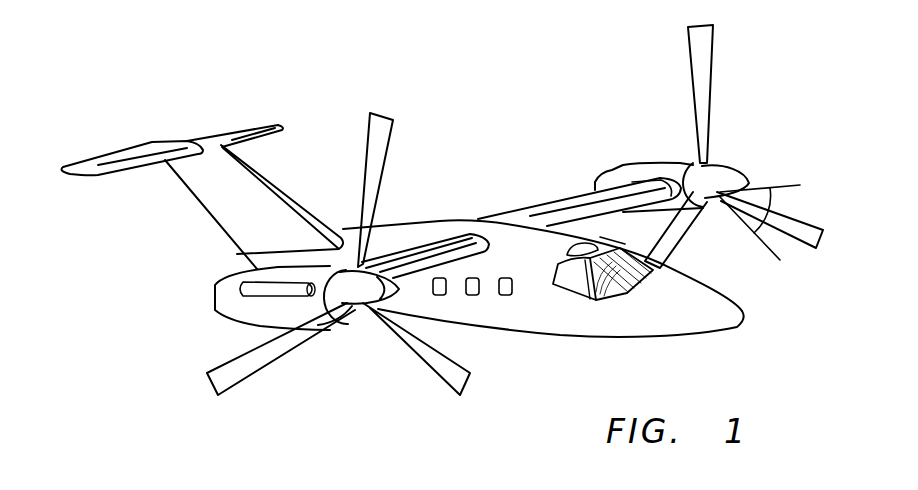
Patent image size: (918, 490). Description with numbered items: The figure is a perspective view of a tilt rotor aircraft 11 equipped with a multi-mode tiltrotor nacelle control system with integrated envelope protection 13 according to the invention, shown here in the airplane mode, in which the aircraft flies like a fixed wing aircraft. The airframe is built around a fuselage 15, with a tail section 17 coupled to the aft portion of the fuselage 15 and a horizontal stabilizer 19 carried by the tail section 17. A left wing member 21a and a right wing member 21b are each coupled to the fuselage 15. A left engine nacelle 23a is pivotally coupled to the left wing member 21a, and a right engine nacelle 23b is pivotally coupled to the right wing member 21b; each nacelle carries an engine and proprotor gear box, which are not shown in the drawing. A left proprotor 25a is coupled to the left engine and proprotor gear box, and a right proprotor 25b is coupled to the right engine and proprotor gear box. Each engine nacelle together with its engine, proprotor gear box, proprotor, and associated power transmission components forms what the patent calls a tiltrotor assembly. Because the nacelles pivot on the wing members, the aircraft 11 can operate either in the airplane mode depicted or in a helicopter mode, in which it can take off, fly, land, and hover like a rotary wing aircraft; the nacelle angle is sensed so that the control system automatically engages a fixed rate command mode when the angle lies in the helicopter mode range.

The tilt rotor aircraft 11 is at (318, 77).
The multi-mode tiltrotor nacelle control system with integrated envelope protection 13 is at (613, 291).
The fuselage 15 is at (562, 337).
The tail section 17 is at (285, 197).
The horizontal stabilizer 19 is at (238, 132).
The left wing member 21a is at (547, 207).
The right wing member 21b is at (457, 250).
The left engine nacelle 23a is at (633, 167).
The right engine nacelle 23b is at (225, 298).
The left proprotor 25a is at (723, 173).
The right proprotor 25b is at (367, 298).